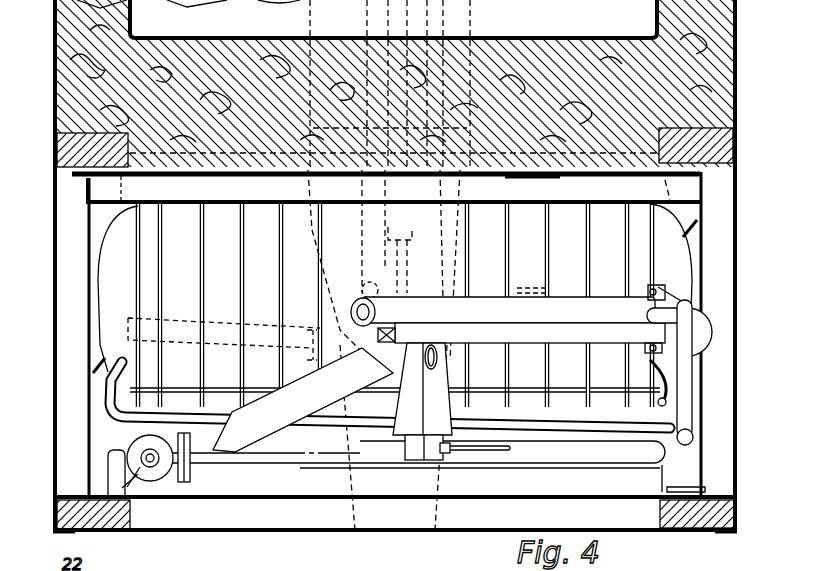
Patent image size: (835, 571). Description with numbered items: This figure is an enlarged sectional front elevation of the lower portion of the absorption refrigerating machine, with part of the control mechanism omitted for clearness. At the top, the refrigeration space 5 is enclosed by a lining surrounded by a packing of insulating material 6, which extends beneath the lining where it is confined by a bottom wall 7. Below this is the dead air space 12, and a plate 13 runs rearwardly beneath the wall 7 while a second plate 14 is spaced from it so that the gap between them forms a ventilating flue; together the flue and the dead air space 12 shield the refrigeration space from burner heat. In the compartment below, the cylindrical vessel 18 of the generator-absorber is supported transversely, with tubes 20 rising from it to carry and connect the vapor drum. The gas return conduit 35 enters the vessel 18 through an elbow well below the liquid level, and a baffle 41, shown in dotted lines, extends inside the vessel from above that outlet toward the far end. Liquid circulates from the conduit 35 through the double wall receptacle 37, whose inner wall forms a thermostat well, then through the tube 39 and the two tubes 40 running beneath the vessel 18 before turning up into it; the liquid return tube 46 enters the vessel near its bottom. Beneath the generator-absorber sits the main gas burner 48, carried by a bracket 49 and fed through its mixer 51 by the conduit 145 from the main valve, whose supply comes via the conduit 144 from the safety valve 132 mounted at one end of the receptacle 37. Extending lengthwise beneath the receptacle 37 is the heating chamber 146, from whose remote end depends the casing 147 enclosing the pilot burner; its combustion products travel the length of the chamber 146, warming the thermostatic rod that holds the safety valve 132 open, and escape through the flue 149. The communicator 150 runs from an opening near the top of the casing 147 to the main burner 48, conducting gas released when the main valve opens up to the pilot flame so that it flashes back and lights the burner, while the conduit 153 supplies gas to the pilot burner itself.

The refrigeration space 5 is at (393, 19).
The insulating material 6 is at (713, 70).
The bottom wall 7 is at (270, 178).
The dead air space 12 is at (228, 177).
The plate 13 is at (530, 178).
The plate 14 is at (191, 206).
The cylindrical vessel 18 is at (395, 305).
The tubes 20 is at (138, 210).
The gas return conduit 35 is at (367, 23).
The double wall receptacle 37 is at (519, 305).
The tube 39 is at (693, 404).
The tubes 40 is at (607, 431).
The baffle 41 is at (220, 323).
The liquid return tube 46 is at (410, 228).
The gas burner 48 is at (388, 462).
The bracket 49 is at (119, 450).
The mixer 51 is at (160, 480).
The safety valve 132 is at (703, 332).
The conduit 144 is at (567, 289).
The conduit 145 is at (273, 461).
The heating chamber 146 is at (522, 364).
The casing 147 is at (452, 412).
The flue 149 is at (598, 237).
The communicator 150 is at (303, 400).
The conduit 153 is at (497, 451).